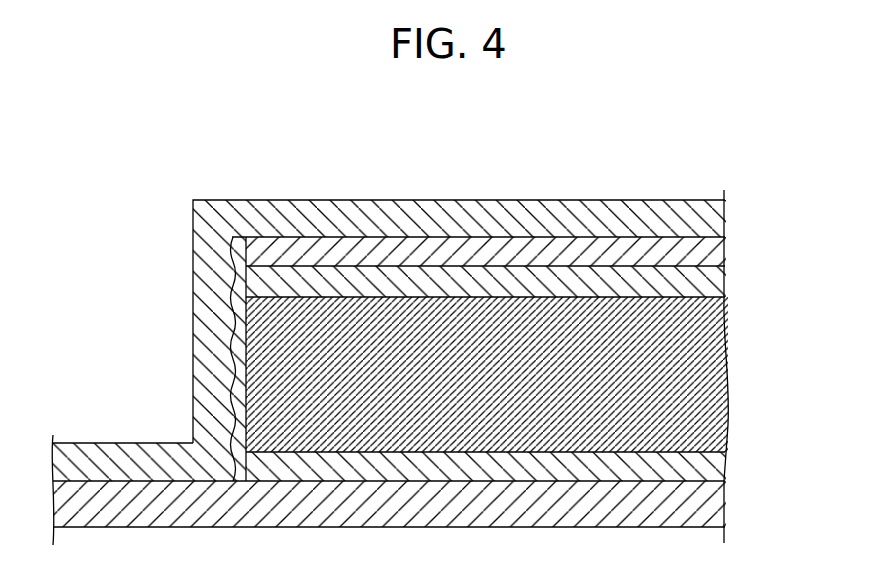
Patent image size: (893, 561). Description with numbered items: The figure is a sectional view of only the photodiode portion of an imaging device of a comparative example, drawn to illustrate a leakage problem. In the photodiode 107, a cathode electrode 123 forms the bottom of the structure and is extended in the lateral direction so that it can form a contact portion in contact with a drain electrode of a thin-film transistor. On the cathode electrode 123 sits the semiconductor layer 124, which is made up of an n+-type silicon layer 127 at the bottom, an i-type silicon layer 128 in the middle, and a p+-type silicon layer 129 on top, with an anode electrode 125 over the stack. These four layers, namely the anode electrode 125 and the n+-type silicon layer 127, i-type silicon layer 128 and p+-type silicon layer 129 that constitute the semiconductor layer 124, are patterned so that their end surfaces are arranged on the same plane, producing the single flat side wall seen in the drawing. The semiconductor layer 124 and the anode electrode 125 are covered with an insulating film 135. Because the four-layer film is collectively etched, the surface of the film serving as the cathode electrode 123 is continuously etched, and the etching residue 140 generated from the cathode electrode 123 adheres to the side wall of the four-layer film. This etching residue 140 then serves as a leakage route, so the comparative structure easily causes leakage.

The photodiode 107 is at (547, 191).
The cathode electrode 123 is at (707, 512).
The semiconductor layer 124 is at (818, 268).
The anode electrode 125 is at (430, 250).
The n+-type silicon layer 127 is at (707, 469).
The i-type silicon layer 128 is at (712, 370).
The p+-type silicon layer 129 is at (712, 282).
The insulating film 135 is at (633, 221).
The etching residue 140 is at (238, 400).